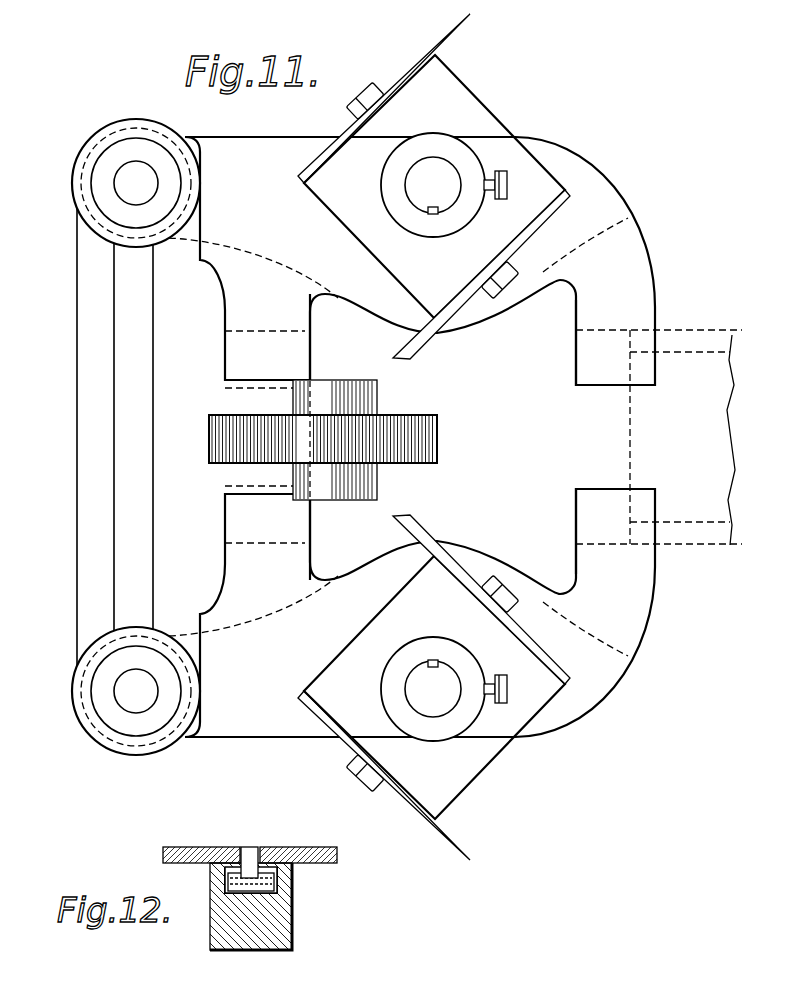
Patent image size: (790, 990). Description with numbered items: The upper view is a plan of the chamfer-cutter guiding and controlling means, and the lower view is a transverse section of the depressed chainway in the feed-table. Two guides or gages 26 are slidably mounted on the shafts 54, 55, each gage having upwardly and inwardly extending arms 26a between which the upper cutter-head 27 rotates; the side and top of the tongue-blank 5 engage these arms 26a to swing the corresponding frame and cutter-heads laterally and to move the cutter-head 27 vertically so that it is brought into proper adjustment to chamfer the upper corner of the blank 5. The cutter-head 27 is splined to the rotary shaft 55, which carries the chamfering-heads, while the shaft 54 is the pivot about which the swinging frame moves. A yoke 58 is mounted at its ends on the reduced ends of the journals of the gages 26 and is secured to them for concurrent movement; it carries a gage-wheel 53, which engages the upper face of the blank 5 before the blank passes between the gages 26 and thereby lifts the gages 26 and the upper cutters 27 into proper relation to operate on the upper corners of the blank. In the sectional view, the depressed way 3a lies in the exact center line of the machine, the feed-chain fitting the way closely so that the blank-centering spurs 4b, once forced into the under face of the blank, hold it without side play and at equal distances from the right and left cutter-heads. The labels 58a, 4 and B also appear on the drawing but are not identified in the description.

In FIG. 11, the guide or gage 26 is at (406, 437).
In FIG. 11, the upwardly and inwardly extending arm 26a is at (300, 350).
In FIG. 11, the upper cutter-head 27 is at (477, 107).
In FIG. 11, the gage-wheel 53 is at (438, 435).
In FIG. 11, the shaft 54 is at (136, 437).
In FIG. 11, the rotary shaft 55 is at (444, 437).
In FIG. 11, the yoke 58 is at (77, 428).
In FIG. 11, the pulley 58a is at (73, 200).
In FIG. 11, the tongue-blank 5 is at (659, 437).
In FIG. 12, the blank-centering spur 4b is at (250, 841).
In FIG. 12, the nut 4 is at (250, 872).
In FIG. 12, the bed block B is at (288, 924).
In FIG. 12, the depressed way 3a is at (225, 897).